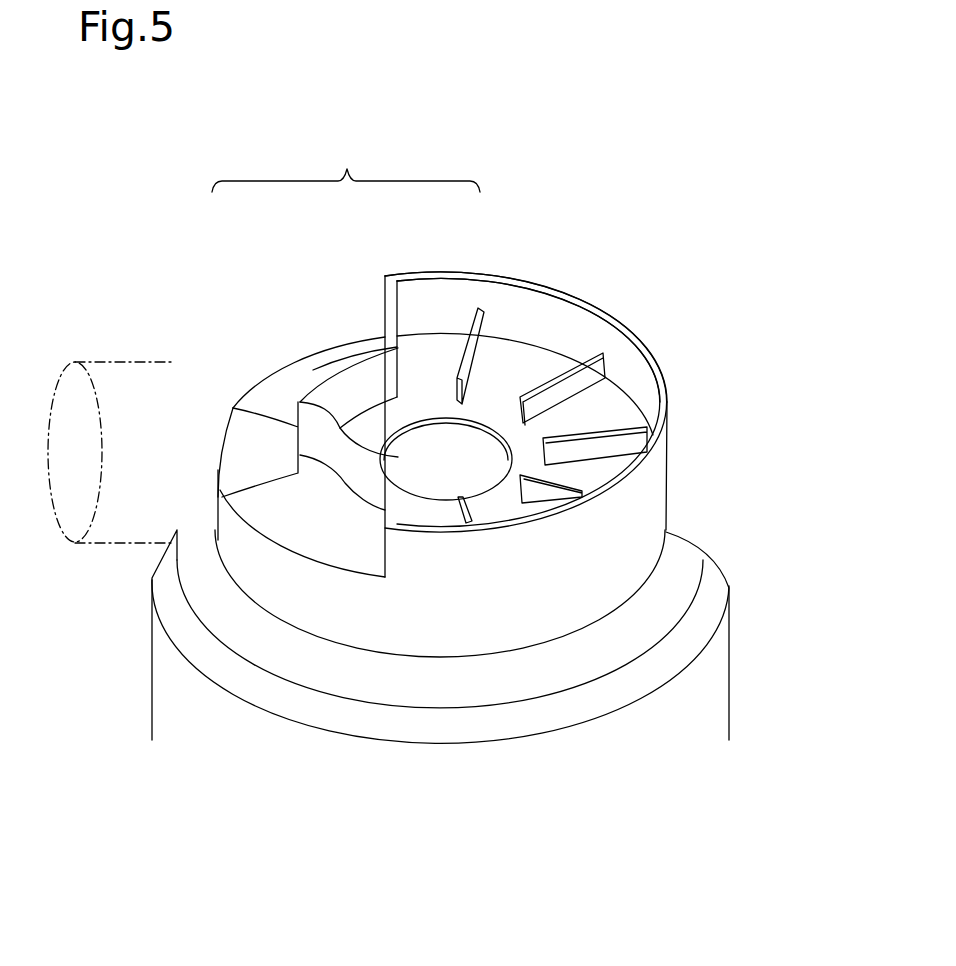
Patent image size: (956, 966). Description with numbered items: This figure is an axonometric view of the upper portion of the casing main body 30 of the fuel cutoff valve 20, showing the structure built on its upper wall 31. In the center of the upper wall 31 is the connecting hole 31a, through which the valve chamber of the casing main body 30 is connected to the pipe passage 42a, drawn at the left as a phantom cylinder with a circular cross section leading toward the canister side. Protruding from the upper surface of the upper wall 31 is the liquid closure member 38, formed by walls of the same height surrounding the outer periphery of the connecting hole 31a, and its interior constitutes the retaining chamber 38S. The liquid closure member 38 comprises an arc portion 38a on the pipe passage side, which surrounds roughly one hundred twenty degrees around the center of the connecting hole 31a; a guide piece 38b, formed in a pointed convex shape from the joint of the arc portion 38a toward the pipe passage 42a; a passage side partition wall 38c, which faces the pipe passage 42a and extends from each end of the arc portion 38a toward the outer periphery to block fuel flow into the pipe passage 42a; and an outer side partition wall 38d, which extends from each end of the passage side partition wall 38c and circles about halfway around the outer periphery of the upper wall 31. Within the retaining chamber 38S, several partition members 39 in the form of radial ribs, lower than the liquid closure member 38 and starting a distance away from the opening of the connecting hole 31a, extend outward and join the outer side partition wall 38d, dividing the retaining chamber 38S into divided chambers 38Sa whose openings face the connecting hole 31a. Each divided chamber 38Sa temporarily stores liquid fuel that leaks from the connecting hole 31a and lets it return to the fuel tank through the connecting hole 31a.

The fuel cutoff valve 20 is at (630, 573).
The casing main body 30 is at (502, 636).
The upper wall 31 is at (683, 540).
The connecting hole 31a is at (438, 486).
The liquid closure member 38 is at (346, 164).
The arc portion 38a is at (356, 380).
The guide piece 38b is at (320, 392).
The passage side partition wall 38c is at (387, 330).
The outer side partition wall 38d is at (438, 272).
The retaining chamber 38S is at (453, 307).
The divided chamber 38Sa is at (577, 412).
The partition member 39 is at (547, 380).
The pipe passage 42a is at (158, 477).